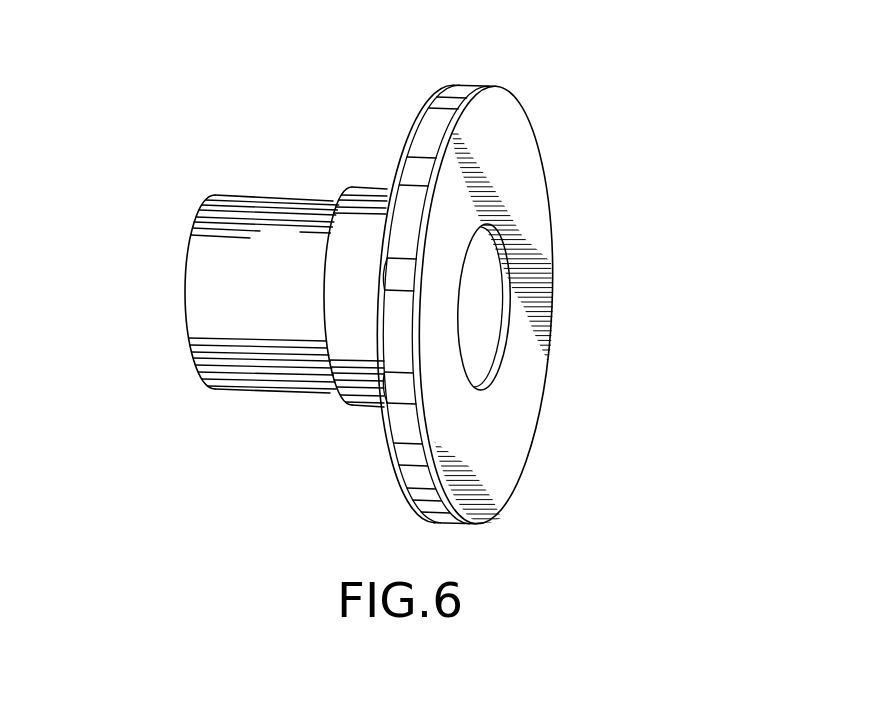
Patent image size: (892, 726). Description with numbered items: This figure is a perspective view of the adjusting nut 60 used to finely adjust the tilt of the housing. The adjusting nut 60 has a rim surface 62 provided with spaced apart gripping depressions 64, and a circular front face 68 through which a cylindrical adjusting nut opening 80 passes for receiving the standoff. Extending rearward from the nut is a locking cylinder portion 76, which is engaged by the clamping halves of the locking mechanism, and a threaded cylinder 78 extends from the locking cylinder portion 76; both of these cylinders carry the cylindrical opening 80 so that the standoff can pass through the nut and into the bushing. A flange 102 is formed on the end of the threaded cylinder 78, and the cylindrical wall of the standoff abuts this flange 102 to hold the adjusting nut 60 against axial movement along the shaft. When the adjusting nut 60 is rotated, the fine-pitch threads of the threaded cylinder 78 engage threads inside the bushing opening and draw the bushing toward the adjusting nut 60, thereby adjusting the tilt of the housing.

The adjusting nut 60 is at (591, 209).
The rim surface 62 is at (431, 127).
The gripping depressions 64 is at (443, 101).
The circular front face 68 is at (513, 447).
The locking cylinder portion 76 is at (359, 389).
The threaded cylinder 78 is at (209, 359).
The adjusting nut opening 80 is at (488, 306).
The flange 102 is at (160, 243).